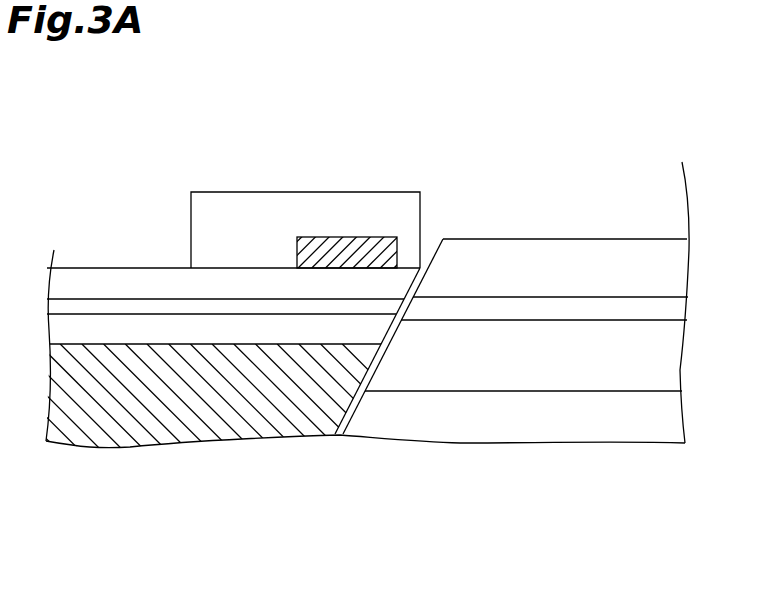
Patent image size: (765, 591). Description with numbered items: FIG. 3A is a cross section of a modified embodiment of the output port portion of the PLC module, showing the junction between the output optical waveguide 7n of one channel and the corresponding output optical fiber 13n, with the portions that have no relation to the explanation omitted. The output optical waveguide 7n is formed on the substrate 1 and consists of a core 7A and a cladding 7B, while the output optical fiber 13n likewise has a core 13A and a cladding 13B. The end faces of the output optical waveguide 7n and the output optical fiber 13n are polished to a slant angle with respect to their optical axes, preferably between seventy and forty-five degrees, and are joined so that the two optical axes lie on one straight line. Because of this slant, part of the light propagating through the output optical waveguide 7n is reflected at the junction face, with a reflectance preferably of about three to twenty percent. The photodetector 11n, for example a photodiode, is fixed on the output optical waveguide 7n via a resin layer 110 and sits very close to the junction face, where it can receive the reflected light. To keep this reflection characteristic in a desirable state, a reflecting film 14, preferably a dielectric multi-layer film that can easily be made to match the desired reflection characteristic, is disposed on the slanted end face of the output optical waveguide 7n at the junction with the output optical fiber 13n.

The substrate 1 is at (163, 430).
The output optical waveguide 7n is at (183, 141).
The core 7A is at (84, 307).
The cladding 7B is at (158, 280).
The resin layer 110 is at (248, 205).
The photodetector 11n is at (347, 237).
The reflecting film 14 is at (350, 415).
The output optical fiber 13n is at (512, 101).
The core 13A is at (537, 310).
The cladding 13B is at (625, 252).